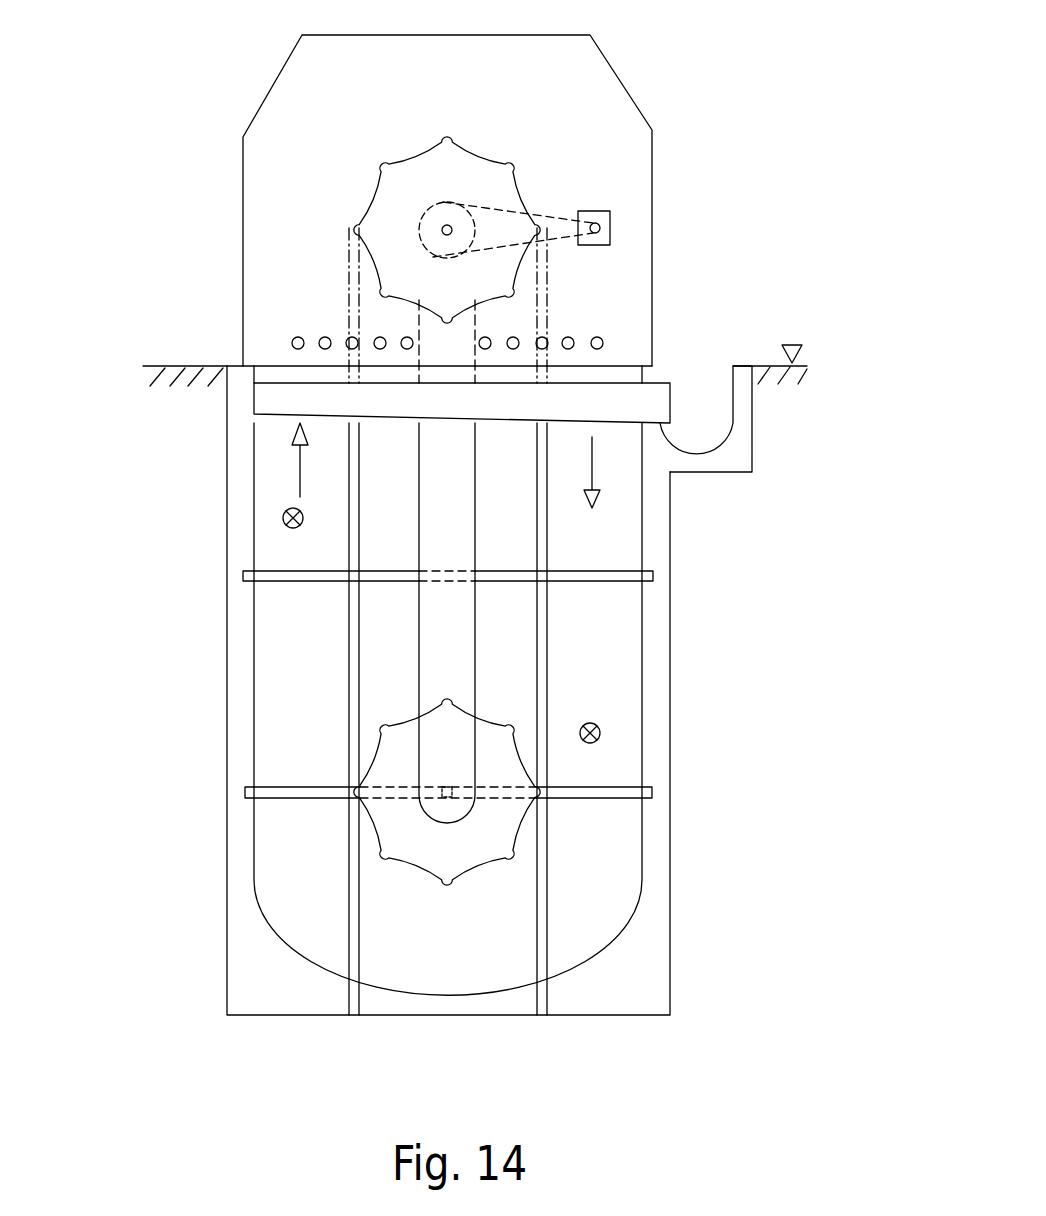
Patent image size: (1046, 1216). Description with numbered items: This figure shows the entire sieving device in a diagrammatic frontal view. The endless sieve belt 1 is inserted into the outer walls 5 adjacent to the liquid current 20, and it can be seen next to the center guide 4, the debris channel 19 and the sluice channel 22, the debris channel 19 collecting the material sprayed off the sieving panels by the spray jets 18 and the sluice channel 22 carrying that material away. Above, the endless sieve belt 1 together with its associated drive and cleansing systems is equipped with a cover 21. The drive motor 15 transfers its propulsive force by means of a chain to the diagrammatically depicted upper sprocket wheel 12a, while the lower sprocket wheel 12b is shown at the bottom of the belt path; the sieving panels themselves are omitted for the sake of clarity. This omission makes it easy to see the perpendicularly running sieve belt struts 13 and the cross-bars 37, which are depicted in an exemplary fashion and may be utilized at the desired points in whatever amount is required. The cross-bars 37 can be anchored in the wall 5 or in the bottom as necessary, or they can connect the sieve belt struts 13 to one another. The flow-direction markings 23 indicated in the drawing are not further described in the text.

The endless sieve belt 1 is at (573, 630).
The center guide 4 is at (440, 640).
The outer walls 5 is at (658, 753).
The upper sprocket wheel 12a is at (467, 177).
The lower sprocket wheel 12b is at (500, 832).
The sieve belt struts 13 is at (350, 695).
The drive motor 15 is at (600, 220).
The spray jets 18 is at (315, 330).
The debris channel 19 is at (302, 399).
The liquid current 20 is at (278, 522).
The cover 21 is at (305, 213).
The sluice channel 22 is at (737, 455).
The flow arrows 23 is at (302, 462).
The cross-bars 37 is at (302, 792).